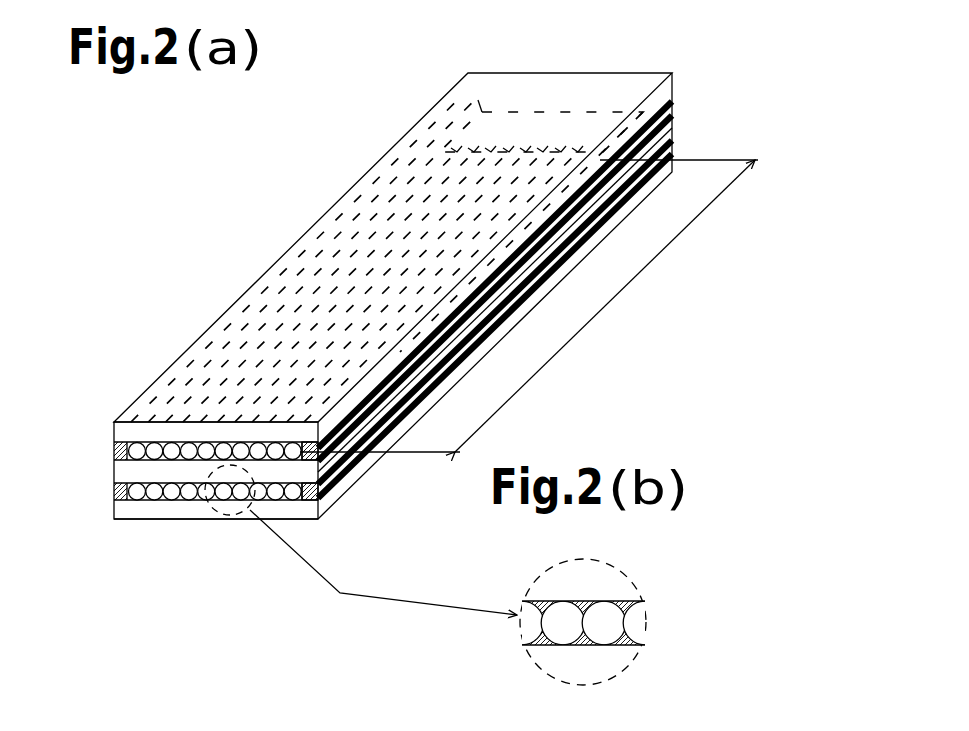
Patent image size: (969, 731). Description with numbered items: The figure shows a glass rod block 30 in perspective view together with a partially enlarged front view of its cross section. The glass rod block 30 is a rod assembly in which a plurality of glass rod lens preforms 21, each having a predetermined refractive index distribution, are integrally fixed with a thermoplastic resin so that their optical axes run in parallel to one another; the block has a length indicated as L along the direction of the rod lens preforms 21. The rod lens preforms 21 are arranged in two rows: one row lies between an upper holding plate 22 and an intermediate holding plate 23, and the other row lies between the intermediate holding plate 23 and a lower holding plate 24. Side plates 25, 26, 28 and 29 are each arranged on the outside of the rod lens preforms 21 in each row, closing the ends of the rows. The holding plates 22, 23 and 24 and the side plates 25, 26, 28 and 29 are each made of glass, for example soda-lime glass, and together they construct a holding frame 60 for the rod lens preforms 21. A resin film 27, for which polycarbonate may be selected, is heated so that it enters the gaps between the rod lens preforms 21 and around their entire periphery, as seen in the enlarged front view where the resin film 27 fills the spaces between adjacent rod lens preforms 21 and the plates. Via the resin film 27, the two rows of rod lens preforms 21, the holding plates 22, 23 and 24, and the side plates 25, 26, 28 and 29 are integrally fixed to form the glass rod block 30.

In FIG. 2A, the glass rod block 30 is at (404, 110).
In FIG. 2A, the holding frame 60 is at (671, 72).
In FIG. 2A, the glass rod lens preform 21 is at (341, 201).
In FIG. 2B, the glass rod lens preform 21 is at (562, 607).
In FIG. 2A, the upper holding plate 22 is at (111, 424).
In FIG. 2A, the side plate 25 is at (111, 452).
In FIG. 2A, the intermediate holding plate 23 is at (111, 471).
In FIG. 2B, the intermediate holding plate 23 is at (626, 585).
In FIG. 2A, the side plate 28 is at (111, 492).
In FIG. 2A, the lower holding plate 24 is at (111, 517).
In FIG. 2B, the lower holding plate 24 is at (545, 664).
In FIG. 2A, the side plate 26 is at (308, 456).
In FIG. 2A, the side plate 29 is at (316, 500).
In FIG. 2B, the resin film 27 is at (631, 646).
In FIG. 2A, the length L is at (600, 305).